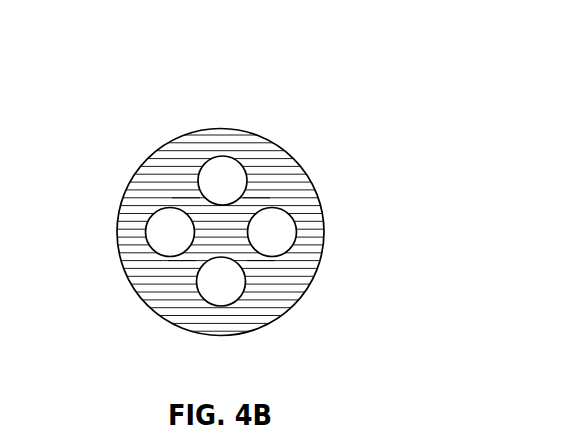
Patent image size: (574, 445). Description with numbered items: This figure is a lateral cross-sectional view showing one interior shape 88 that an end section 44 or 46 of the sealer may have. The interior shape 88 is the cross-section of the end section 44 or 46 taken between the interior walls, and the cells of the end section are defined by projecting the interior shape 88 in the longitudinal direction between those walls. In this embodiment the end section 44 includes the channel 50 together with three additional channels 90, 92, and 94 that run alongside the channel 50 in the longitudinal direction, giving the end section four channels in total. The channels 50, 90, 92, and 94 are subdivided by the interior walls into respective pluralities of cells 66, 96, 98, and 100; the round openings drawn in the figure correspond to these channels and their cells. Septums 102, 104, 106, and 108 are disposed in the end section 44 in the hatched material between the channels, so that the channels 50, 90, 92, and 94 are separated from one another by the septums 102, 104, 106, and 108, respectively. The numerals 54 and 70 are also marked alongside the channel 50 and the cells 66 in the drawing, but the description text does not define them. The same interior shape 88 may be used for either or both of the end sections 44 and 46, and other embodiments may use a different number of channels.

The end section 44 is at (242, 202).
The end section 46 is at (242, 202).
The interior shape 88 is at (170, 163).
The channel 90 is at (252, 319).
The channel 92 is at (313, 234).
The channel 94 is at (256, 145).
The plurality of cells 96 is at (226, 286).
The plurality of cells 98 is at (280, 223).
The plurality of cells 100 is at (223, 173).
The septum 102 is at (192, 263).
The septum 104 is at (250, 257).
The septum 106 is at (250, 202).
The septum 108 is at (190, 202).
The channel 50 is at (114, 238).
The lumen 54 is at (114, 238).
The plurality of cells 66 is at (115, 248).
The lumen 70 is at (167, 238).